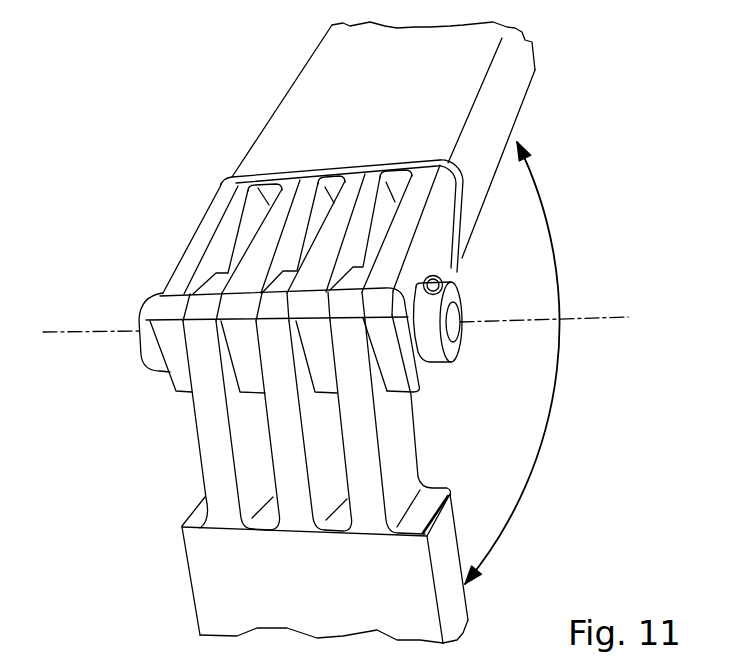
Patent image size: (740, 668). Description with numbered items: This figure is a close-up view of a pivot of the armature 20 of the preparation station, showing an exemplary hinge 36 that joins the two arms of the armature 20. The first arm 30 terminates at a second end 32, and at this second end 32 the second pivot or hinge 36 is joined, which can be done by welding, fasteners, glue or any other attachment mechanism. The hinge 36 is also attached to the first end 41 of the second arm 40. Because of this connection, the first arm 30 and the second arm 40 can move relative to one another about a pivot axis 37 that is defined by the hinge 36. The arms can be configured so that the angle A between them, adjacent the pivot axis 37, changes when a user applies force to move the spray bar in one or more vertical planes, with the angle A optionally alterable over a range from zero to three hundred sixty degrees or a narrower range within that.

The armature 20 is at (283, 347).
The first arm 30 is at (498, 115).
The second end 32 is at (448, 265).
The hinge 36 is at (258, 367).
The pivot axis 37 is at (90, 330).
The second arm 40 is at (442, 533).
The first end 41 is at (400, 420).
The angle A is at (557, 291).